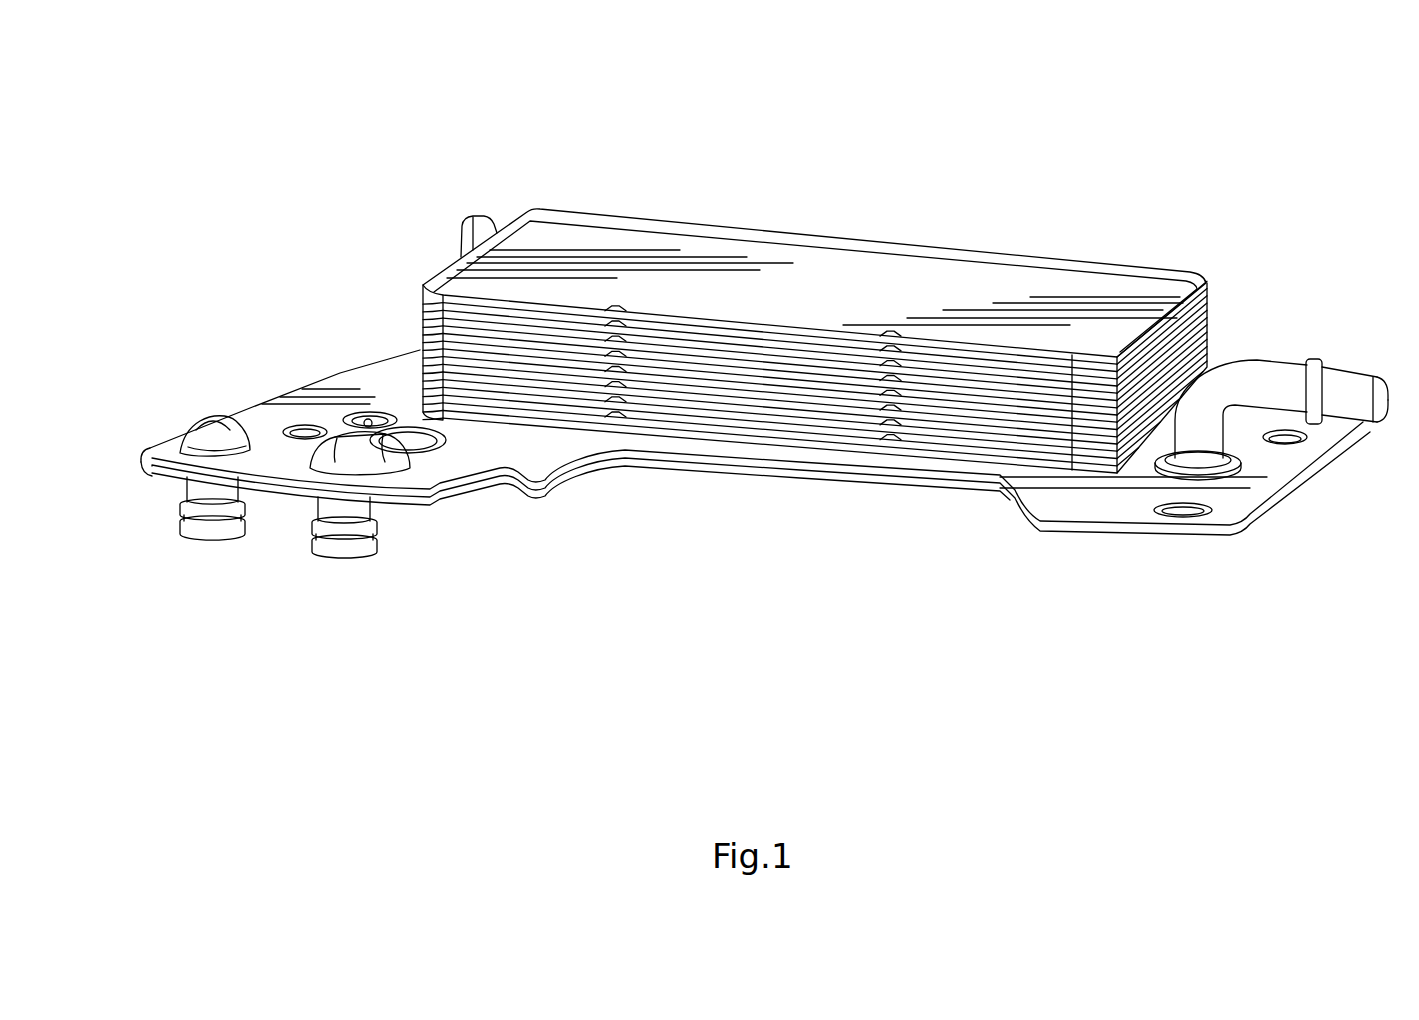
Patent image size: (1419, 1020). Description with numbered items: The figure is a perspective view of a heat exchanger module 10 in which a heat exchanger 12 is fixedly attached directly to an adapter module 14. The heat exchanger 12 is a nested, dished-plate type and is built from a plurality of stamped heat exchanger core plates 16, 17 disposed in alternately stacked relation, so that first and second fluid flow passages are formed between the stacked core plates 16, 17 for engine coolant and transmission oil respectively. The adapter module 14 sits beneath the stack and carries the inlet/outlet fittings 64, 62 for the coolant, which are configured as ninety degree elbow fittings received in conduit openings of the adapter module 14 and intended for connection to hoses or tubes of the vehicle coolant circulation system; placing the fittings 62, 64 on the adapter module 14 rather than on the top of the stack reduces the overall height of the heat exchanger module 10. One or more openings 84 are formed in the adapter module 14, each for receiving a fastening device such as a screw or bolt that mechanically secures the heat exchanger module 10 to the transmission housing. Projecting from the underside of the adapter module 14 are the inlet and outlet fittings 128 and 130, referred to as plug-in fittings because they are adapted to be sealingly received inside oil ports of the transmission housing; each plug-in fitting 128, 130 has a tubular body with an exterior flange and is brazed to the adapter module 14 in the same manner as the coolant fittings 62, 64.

The heat exchanger module 10 is at (1112, 141).
The heat exchanger 12 is at (412, 280).
The adapter module 14 is at (135, 427).
The heat exchanger core plate 16 is at (890, 283).
The heat exchanger core plate 17 is at (1213, 316).
The inlet/outlet fitting 62 is at (1285, 375).
The inlet/outlet fitting 64 is at (487, 227).
The opening 84 is at (453, 440).
The inlet fitting 128 is at (207, 545).
The outlet fitting 130 is at (350, 557).